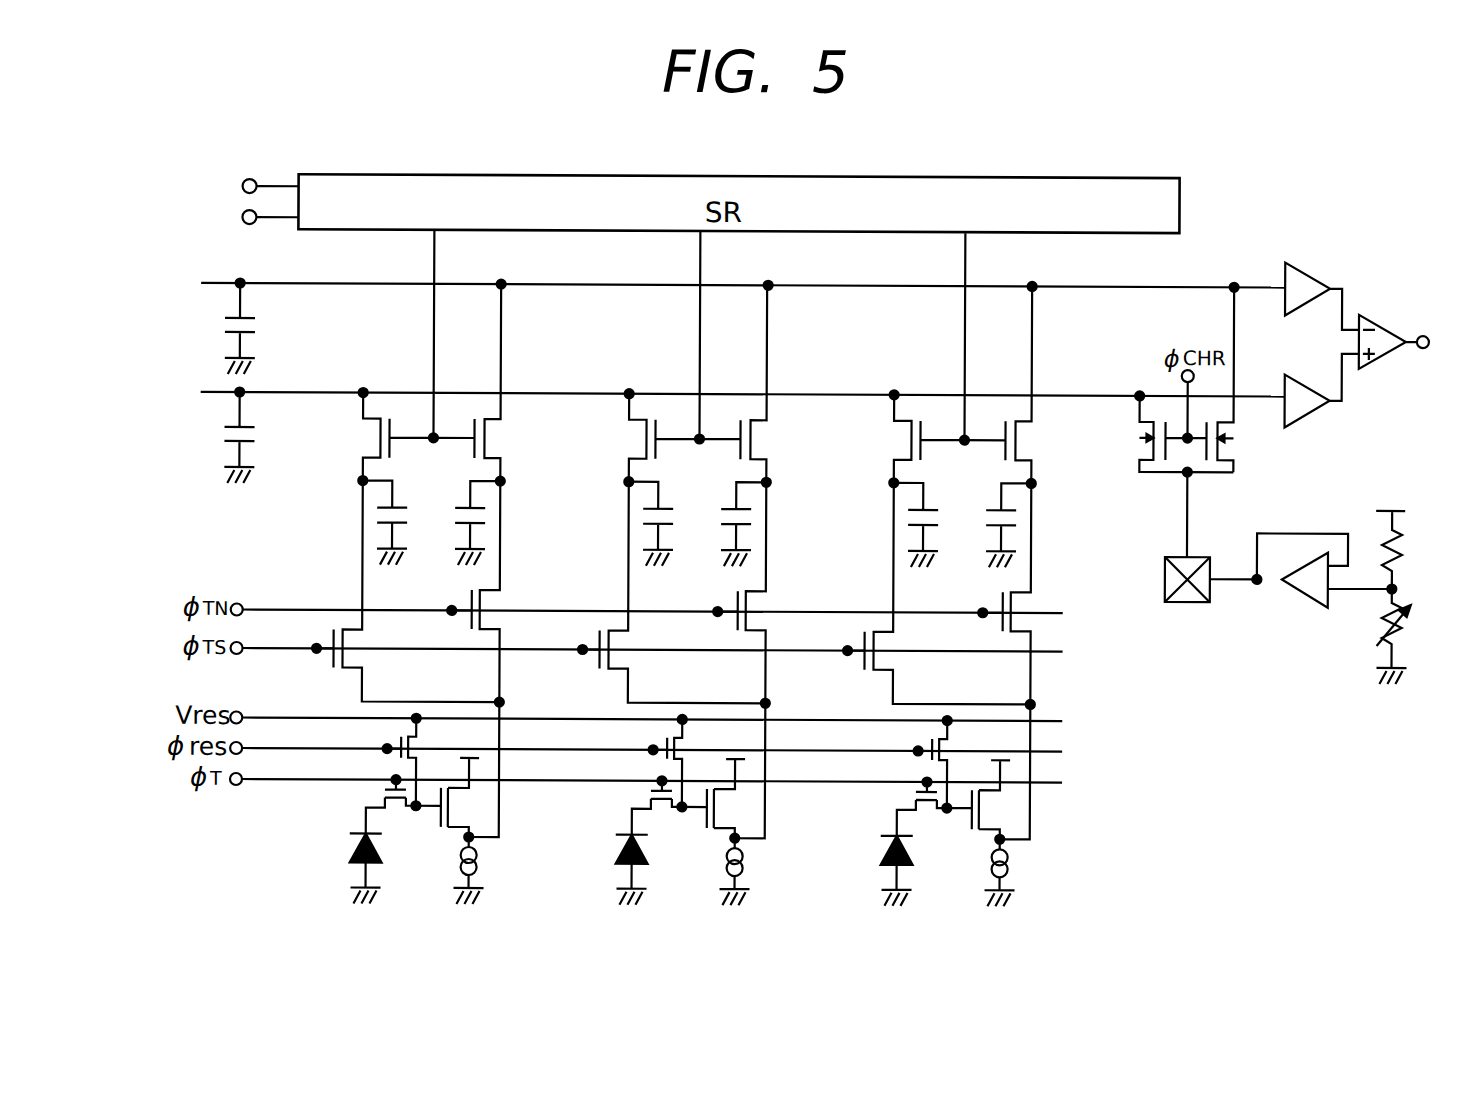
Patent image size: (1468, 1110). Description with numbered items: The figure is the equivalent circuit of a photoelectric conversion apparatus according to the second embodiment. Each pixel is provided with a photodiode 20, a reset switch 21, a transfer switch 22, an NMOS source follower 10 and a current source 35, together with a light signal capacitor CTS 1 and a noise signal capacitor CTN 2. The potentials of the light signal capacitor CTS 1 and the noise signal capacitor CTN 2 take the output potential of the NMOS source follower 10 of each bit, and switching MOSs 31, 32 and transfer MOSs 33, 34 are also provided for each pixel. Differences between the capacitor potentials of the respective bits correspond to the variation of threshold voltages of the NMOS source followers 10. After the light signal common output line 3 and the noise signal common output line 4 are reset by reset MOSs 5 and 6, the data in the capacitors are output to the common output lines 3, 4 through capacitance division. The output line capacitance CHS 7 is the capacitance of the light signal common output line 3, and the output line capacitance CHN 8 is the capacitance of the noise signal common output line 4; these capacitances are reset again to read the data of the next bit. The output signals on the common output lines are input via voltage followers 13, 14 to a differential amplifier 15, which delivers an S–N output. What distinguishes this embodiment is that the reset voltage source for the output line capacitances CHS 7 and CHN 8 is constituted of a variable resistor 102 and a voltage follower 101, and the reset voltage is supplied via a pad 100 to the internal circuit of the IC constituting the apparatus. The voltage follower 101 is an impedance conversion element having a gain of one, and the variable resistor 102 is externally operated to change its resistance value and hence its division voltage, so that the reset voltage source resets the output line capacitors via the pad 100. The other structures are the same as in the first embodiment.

The light signal capacitor CTS 1 is at (397, 516).
The noise signal capacitor CTN 2 is at (499, 520).
The light signal common output line 3 is at (848, 394).
The noise signal common output line 4 is at (870, 285).
The reset MOS 5 is at (1134, 430).
The reset MOS 6 is at (1236, 447).
The output line capacitance CHS 7 is at (252, 433).
The output line capacitance CHN 8 is at (252, 323).
The NMOS source follower 10 is at (477, 772).
The voltage follower 13 is at (1306, 272).
The voltage follower 14 is at (1312, 413).
The differential amplifier 15 is at (1380, 313).
The photodiode 20 is at (333, 868).
The reset switch 21 is at (424, 733).
The transfer switch 22 is at (396, 823).
The switching MOS 31 is at (408, 593).
The switching MOS 32 is at (506, 592).
The transfer MOS 33 is at (388, 436).
The transfer MOS 34 is at (515, 382).
The current source 35 is at (498, 870).
The pad 100 is at (1195, 605).
The voltage follower 101 is at (1300, 595).
The variable resistor 102 is at (1410, 584).